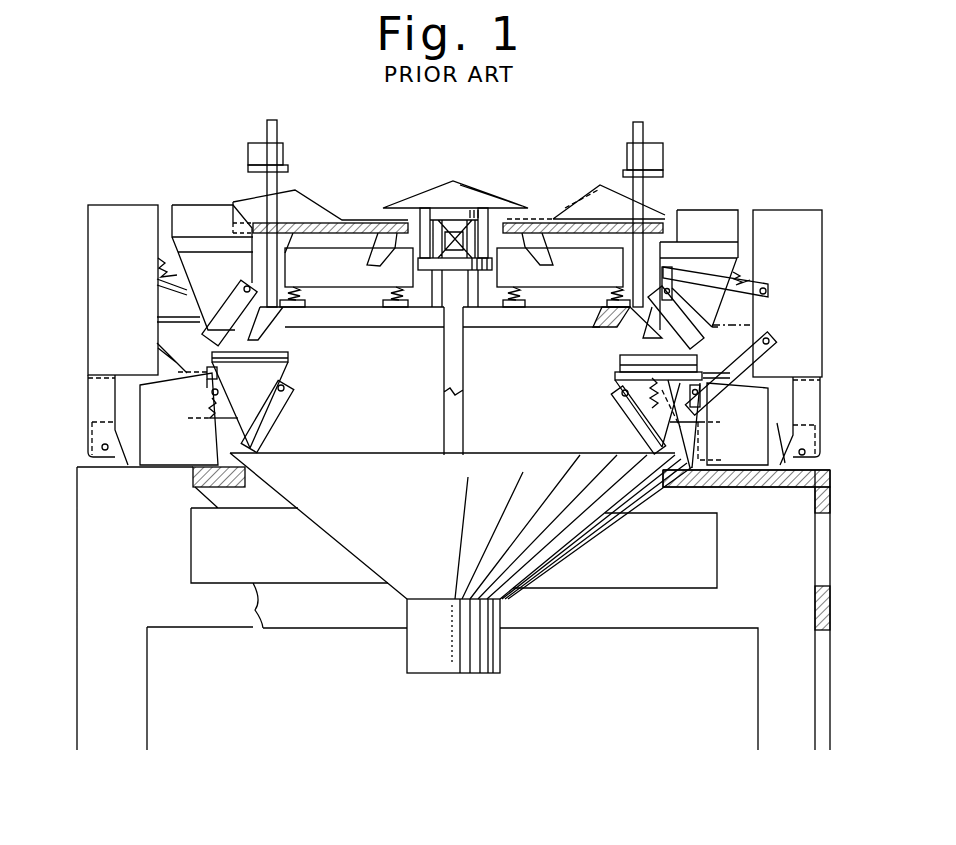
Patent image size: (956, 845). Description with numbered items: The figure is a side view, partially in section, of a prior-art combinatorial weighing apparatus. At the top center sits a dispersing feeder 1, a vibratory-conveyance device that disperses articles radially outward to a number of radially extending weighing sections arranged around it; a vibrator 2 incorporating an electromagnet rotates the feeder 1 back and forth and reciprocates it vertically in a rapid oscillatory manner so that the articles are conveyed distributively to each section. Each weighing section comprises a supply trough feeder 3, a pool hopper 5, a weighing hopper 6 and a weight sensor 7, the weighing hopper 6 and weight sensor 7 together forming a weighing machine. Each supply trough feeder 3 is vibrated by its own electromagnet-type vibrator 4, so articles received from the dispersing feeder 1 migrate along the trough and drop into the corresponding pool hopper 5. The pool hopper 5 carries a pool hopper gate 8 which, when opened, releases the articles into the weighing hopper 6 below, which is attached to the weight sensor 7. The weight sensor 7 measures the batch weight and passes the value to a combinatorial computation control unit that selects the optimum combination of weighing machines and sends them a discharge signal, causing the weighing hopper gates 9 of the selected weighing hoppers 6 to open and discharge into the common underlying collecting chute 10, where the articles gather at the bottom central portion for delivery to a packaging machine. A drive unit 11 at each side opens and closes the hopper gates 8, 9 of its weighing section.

The dispersing feeder 1 is at (428, 188).
The vibrator 2 is at (457, 235).
The supply trough feeder 3 is at (303, 210).
The vibrator 4 is at (338, 270).
The pool hopper 5 is at (200, 265).
The weighing hopper 6 is at (293, 367).
The weight sensor 7 is at (143, 401).
The pool hopper gate 8 is at (232, 305).
The weighing hopper gate 9 is at (270, 408).
The collecting chute 10 is at (382, 462).
The drive unit 11 is at (92, 237).